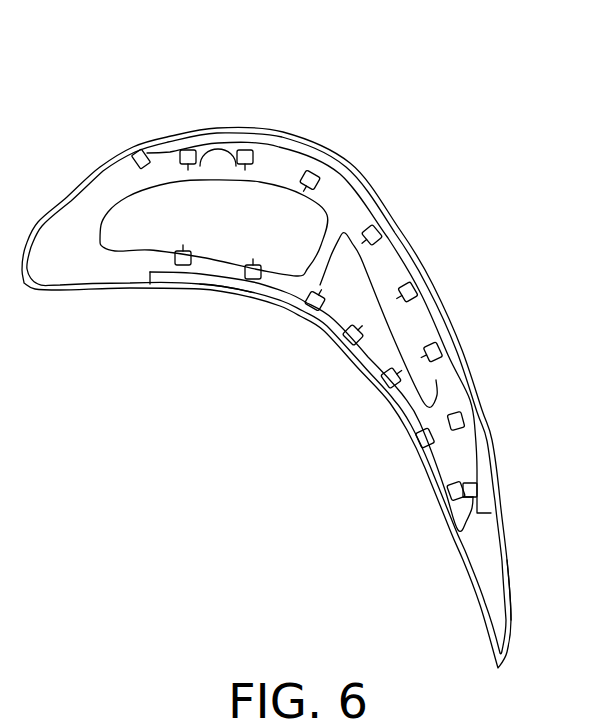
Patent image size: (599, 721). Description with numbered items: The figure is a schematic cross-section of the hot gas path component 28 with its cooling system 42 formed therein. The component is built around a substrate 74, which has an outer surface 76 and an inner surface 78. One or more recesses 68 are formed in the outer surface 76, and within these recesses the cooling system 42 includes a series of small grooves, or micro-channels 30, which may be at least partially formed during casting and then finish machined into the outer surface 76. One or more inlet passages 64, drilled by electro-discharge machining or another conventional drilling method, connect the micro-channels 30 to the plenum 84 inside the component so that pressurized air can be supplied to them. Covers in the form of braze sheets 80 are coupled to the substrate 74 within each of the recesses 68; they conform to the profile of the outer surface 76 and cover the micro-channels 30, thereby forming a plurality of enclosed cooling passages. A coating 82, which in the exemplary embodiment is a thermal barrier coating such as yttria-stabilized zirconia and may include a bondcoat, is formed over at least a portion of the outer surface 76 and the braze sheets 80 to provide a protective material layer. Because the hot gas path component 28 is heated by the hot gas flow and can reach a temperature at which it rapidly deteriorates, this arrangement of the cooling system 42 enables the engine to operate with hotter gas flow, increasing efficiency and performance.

The hot gas path component 28 is at (401, 54).
The micro-channel 30 is at (442, 350).
The cooling system 42 is at (174, 192).
The inlet passage 64 is at (218, 149).
The recess 68 is at (458, 537).
The substrate 74 is at (333, 218).
The outer surface 76 is at (509, 545).
The inner surface 78 is at (157, 272).
The braze sheet 80 is at (393, 233).
The coating 82 is at (248, 306).
The plenum 84 is at (263, 200).